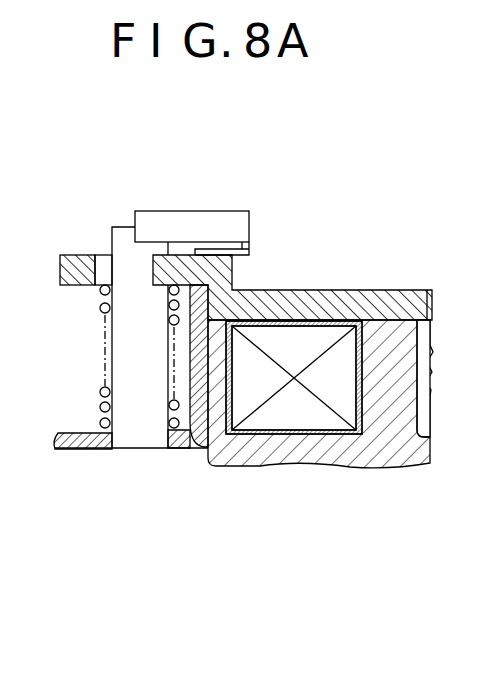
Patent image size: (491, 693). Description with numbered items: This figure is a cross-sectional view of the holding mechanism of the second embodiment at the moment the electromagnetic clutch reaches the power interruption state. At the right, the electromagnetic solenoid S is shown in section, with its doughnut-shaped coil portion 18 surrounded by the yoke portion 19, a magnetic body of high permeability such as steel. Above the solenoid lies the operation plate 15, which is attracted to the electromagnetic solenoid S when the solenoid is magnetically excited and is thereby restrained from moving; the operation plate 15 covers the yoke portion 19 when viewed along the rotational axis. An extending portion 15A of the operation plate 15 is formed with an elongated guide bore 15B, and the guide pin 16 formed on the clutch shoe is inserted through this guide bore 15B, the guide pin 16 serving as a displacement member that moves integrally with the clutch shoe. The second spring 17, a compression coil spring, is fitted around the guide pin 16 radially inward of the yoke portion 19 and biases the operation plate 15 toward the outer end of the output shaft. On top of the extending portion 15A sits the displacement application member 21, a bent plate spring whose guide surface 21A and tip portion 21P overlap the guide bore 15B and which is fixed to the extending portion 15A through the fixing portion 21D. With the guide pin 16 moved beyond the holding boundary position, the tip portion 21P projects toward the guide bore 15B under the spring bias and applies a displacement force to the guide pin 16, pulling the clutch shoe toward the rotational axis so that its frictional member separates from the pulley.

The operation plate 15 is at (335, 307).
The extending portion 15A is at (73, 256).
The guide bore 15B is at (106, 258).
The guide pin 16 is at (128, 330).
The second spring 17 is at (104, 407).
The coil portion 18 is at (292, 413).
The yoke portion 19 is at (202, 446).
The displacement application member 21 is at (218, 196).
The guide surface 21A is at (182, 228).
The fixing portion 21D is at (249, 251).
The tip portion 21P is at (126, 222).
The electromagnetic solenoid S is at (367, 424).